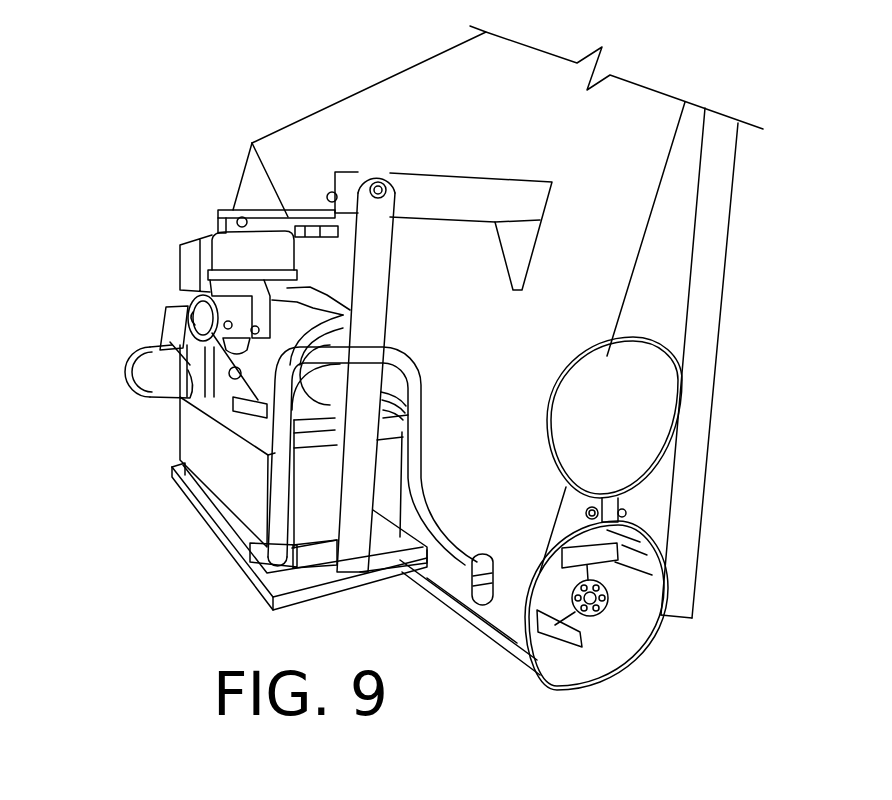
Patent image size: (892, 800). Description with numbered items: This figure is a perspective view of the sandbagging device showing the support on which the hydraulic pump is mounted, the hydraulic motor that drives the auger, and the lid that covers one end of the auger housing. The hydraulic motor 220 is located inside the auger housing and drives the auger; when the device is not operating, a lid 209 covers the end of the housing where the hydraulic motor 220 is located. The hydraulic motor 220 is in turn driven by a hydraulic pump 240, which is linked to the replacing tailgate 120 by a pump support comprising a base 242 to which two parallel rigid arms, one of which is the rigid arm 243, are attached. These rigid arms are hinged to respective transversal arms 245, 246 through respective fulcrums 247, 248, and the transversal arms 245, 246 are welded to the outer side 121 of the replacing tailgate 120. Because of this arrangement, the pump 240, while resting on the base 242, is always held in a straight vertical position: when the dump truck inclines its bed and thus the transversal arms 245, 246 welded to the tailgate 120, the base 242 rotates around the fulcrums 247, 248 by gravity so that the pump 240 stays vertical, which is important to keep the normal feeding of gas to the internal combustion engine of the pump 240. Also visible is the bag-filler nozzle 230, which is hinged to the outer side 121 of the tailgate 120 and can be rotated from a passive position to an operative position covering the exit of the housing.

The tailgate 120 is at (368, 110).
The outer side 121 is at (639, 142).
The lid 209 is at (620, 412).
The hydraulic motor 220 is at (607, 606).
The nozzle 230 is at (143, 370).
The hydraulic pump 240 is at (158, 447).
The base 242 is at (257, 583).
The rigid arm 243 is at (368, 290).
The transversal arm 245 is at (458, 197).
The transversal arm 246 is at (253, 143).
The fulcrum 247 is at (384, 182).
The fulcrum 248 is at (222, 210).